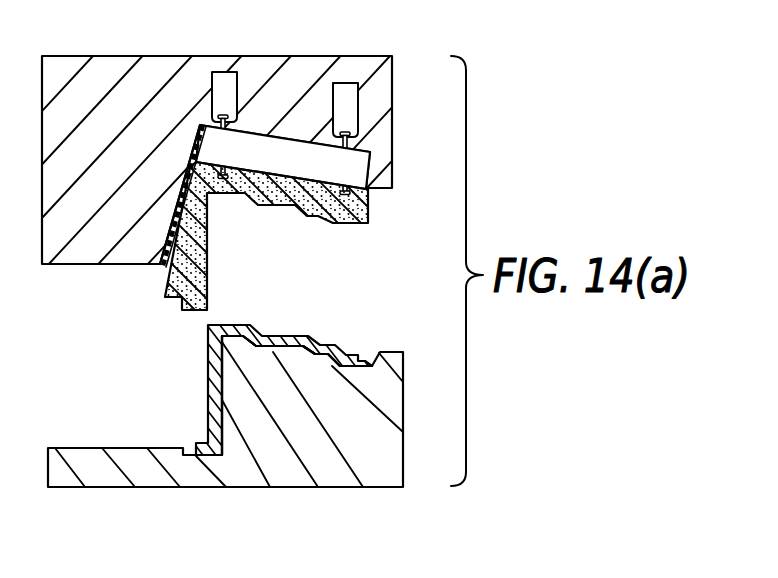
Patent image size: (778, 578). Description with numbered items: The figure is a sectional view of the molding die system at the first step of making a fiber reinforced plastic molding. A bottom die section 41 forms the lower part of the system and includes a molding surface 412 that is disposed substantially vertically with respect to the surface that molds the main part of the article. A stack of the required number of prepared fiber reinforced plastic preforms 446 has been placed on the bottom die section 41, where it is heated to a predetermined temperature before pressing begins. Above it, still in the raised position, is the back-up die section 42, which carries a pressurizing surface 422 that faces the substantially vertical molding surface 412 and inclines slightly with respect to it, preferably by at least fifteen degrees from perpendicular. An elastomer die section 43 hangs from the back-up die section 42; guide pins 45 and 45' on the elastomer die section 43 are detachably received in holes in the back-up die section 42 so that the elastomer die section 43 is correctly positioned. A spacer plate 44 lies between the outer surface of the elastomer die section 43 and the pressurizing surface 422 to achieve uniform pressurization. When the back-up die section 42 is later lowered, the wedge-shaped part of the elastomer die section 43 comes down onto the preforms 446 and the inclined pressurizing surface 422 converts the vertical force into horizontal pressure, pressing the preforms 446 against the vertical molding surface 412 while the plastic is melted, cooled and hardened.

The back-up die section 42 is at (158, 82).
The pressurizing surface 422 is at (166, 234).
The spacer plate 44 is at (167, 257).
The elastomer die section 43 is at (208, 286).
The guide pin 45 is at (285, 106).
The guide pin 45' is at (322, 157).
The bottom die section 41 is at (215, 468).
The molding surface 412 is at (223, 420).
The fiber reinforced plastic preforms 446 is at (216, 404).